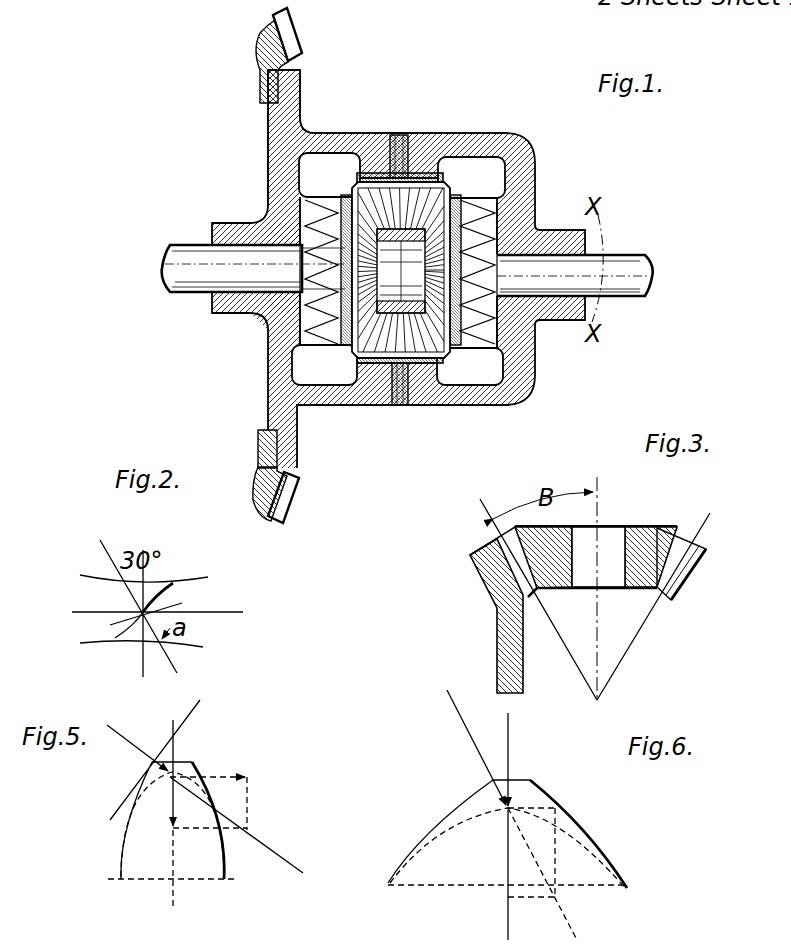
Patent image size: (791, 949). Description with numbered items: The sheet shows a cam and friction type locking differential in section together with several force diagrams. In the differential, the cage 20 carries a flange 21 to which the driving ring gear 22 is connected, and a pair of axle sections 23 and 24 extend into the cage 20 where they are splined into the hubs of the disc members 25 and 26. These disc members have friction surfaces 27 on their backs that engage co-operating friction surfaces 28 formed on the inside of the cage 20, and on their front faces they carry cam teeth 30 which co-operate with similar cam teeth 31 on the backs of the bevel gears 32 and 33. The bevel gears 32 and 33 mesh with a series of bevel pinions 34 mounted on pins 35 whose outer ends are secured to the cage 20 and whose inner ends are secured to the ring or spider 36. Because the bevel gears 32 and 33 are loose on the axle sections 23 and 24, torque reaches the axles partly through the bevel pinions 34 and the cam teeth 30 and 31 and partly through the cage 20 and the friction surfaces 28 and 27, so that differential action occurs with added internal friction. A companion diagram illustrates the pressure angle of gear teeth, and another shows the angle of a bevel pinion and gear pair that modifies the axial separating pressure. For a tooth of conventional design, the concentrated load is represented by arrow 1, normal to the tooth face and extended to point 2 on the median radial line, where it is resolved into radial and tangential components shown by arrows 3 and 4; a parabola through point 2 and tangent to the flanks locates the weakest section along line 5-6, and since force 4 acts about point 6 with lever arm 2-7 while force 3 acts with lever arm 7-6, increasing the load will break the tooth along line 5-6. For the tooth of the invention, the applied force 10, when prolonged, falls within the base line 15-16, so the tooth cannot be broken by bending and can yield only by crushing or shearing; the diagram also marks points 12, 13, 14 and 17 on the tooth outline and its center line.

In FIG. 1, the cage 20 is at (466, 143).
In FIG. 1, the flange 21 is at (300, 92).
In FIG. 1, the driving ring gear 22 is at (257, 43).
In FIG. 1, the axle section 23 is at (195, 291).
In FIG. 1, the axle section 24 is at (632, 262).
In FIG. 1, the disc member 25 is at (313, 218).
In FIG. 1, the disc member 26 is at (540, 195).
In FIG. 1, the friction surfaces 27 is at (497, 335).
In FIG. 1, the friction surfaces 28 is at (295, 329).
In FIG. 1, the cam teeth 30 is at (214, 244).
In FIG. 1, the cam teeth 31 is at (250, 315).
In FIG. 1, the bevel gear 32 is at (342, 203).
In FIG. 1, the bevel gear 33 is at (452, 345).
In FIG. 1, the bevel pinions 34 is at (368, 190).
In FIG. 1, the pins 35 is at (397, 367).
In FIG. 1, the ring or spider 36 is at (363, 362).
In FIG. 5, the arrow (concentrated load) 1 is at (137, 734).
In FIG. 5, the point 2 is at (185, 773).
In FIG. 5, the arrow (radial force) 3 is at (130, 790).
In FIG. 5, the arrow (tangential force) 4 is at (230, 777).
In FIG. 5, the point 5 is at (121, 879).
In FIG. 5, the point 6 is at (226, 879).
In FIG. 5, the point 7 is at (178, 883).
In FIG. 6, the force 10 is at (476, 747).
In FIG. 6, the pitch point 12 is at (511, 804).
In FIG. 6, the center line 13 is at (508, 845).
In FIG. 6, the offset point 14 is at (549, 808).
In FIG. 6, the base line end point 15 is at (388, 883).
In FIG. 6, the base line end point 16 is at (627, 888).
In FIG. 6, the center point 17 is at (508, 885).